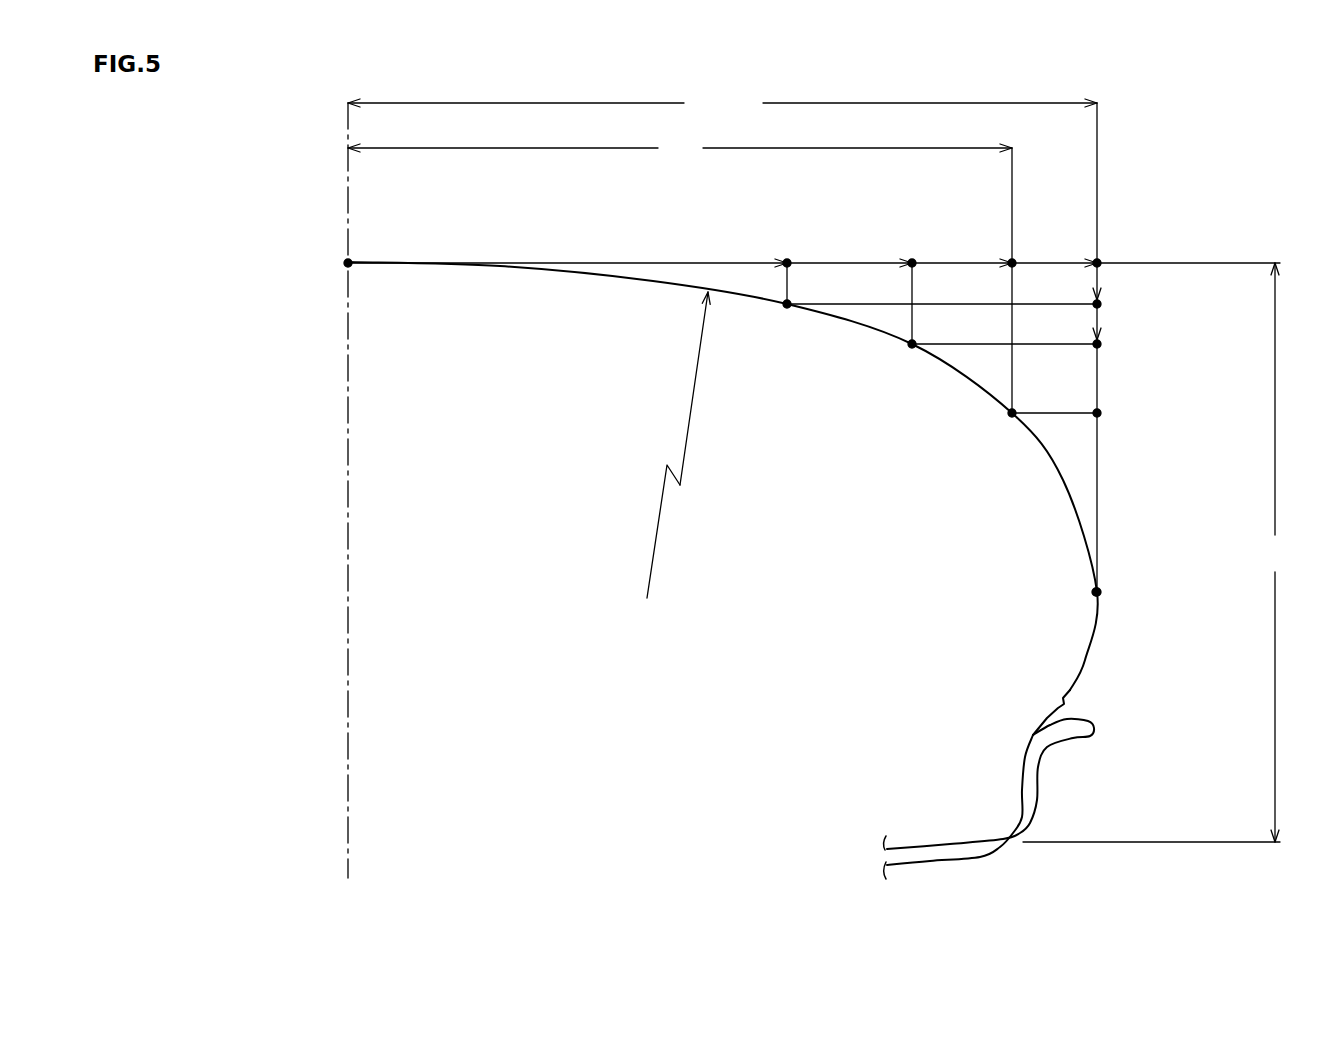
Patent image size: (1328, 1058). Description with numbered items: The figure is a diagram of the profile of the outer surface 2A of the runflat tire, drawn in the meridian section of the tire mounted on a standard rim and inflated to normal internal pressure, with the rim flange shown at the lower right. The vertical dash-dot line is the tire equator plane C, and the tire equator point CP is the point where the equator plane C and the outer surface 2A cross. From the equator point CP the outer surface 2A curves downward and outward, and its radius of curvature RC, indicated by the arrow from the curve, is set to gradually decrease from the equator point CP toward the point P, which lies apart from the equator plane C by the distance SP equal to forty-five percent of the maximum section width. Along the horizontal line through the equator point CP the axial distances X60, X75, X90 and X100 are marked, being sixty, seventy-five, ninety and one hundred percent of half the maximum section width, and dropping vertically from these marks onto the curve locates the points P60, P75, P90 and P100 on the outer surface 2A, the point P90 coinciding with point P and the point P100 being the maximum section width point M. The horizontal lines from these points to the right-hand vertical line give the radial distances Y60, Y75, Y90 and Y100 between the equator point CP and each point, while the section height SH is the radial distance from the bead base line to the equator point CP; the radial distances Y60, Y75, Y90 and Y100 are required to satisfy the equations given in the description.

The outer surface 2A is at (653, 281).
The tire equator plane C is at (347, 553).
The tire equator point CP is at (347, 262).
The radius of curvature RC is at (688, 435).
The distance of point P from the tire equator plane SP is at (680, 148).
The section height SH is at (1275, 552).
The distance of P60 from the tire equator plane X60 is at (790, 267).
The distance of P75 from the tire equator plane X75 is at (913, 287).
The distance of P90 from the tire equator plane X90 is at (1035, 280).
The distance of P100 from the tire equator plane X100 is at (1129, 347).
The radial distance to P60 Y60 is at (1125, 306).
The radial distance to P75 Y75 is at (1125, 344).
The radial distance to P90 Y90 is at (1125, 414).
The radial distance to P100 Y100 is at (1133, 592).
The point on tire outer surface at 60% of half width P60 is at (931, 321).
The point on tire outer surface at 75% of half width P75 is at (990, 361).
The point on tire outer surface at 90% of half width P90 is at (1032, 440).
The point on tire outer surface at 100% of half width P100 is at (1060, 605).